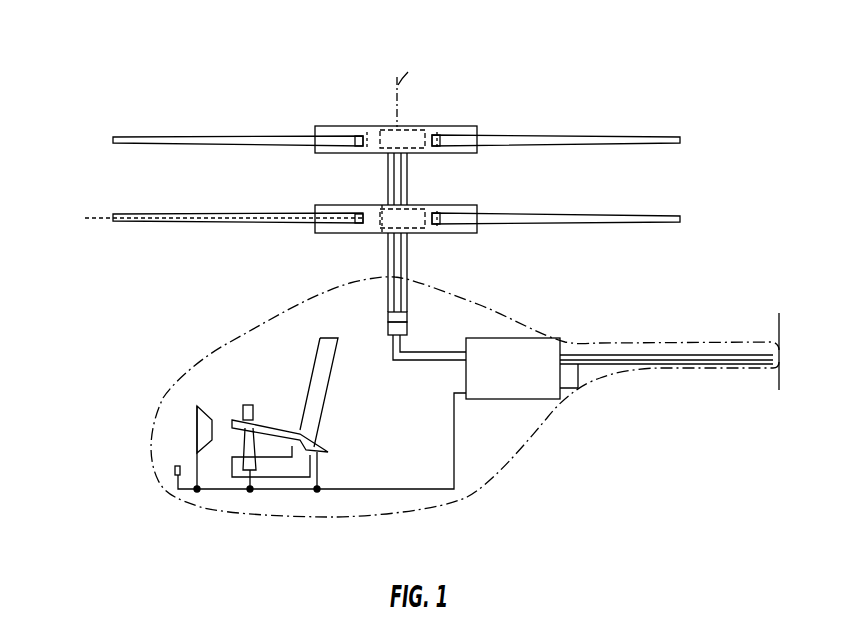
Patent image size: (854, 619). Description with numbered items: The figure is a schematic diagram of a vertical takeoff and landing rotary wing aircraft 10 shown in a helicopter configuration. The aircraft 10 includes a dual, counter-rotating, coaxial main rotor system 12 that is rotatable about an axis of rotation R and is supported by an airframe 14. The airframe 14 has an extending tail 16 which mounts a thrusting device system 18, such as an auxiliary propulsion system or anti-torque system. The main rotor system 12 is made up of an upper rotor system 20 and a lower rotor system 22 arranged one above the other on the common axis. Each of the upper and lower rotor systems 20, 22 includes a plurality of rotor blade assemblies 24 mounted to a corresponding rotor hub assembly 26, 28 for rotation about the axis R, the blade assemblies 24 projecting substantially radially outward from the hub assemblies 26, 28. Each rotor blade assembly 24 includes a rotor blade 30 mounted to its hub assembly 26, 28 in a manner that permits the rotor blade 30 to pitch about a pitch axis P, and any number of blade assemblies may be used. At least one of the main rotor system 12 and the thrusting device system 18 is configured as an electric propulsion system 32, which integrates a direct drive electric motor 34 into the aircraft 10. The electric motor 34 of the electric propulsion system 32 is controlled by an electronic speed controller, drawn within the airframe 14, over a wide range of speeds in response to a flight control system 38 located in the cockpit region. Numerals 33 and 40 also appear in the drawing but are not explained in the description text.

The vertical takeoff and landing (VTOL) rotary wing aircraft 10 is at (262, 47).
The dual, counter-rotating main rotor system 12 is at (495, 77).
The airframe 14 is at (485, 305).
The extending tail 16 is at (650, 373).
The thrusting device system 18 is at (780, 333).
The upper rotor system 20 is at (380, 117).
The lower rotor system 22 is at (366, 203).
The rotor blade assembly 24 is at (532, 135).
The rotor hub assembly 26 is at (425, 132).
The rotor hub assembly 28 is at (425, 213).
The rotor blade 30 is at (200, 137).
The electric propulsion system 32 is at (422, 251).
The hub bearing 33 is at (412, 210).
The direct drive electric motor 34 is at (408, 140).
The flight control system 38 is at (165, 432).
The electric motor 40 is at (388, 258).